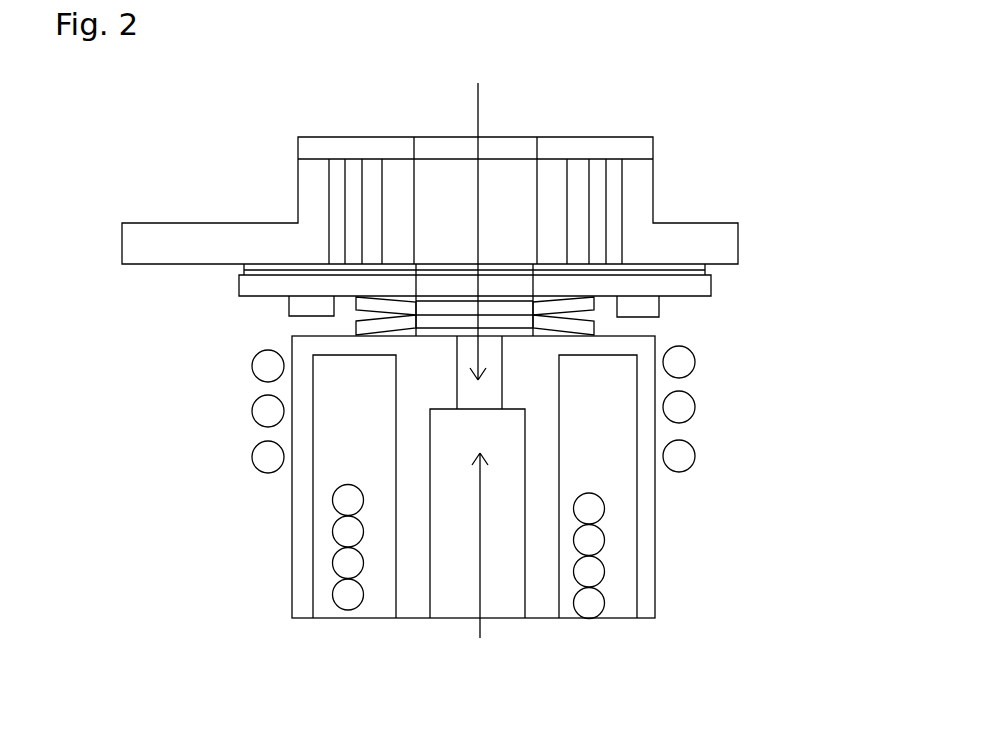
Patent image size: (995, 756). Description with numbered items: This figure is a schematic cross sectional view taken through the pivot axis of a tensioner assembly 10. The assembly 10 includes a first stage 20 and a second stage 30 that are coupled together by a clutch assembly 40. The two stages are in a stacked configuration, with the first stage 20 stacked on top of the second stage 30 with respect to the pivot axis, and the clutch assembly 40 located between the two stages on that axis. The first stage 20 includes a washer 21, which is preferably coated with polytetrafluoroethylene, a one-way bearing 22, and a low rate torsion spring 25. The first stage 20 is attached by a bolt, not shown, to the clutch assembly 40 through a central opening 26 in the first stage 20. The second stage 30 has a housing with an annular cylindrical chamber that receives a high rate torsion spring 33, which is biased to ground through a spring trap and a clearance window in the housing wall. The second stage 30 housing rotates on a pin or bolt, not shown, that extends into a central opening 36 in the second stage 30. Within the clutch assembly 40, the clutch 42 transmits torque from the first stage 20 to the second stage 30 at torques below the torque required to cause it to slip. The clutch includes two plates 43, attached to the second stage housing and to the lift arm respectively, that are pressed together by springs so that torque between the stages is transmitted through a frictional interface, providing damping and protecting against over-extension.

The assembly 10 is at (801, 77).
The first stage 20 is at (793, 136).
The washer 21 is at (336, 144).
The one-way bearing 22 is at (353, 217).
The low rate torsion spring 25 is at (683, 459).
The central opening 26 is at (477, 219).
The second stage 30 is at (149, 336).
The high rate torsion spring 33 is at (590, 600).
The central opening 36 is at (480, 560).
The clutch assembly 40 is at (85, 264).
The clutch 42 is at (373, 327).
The plates 43 is at (595, 333).